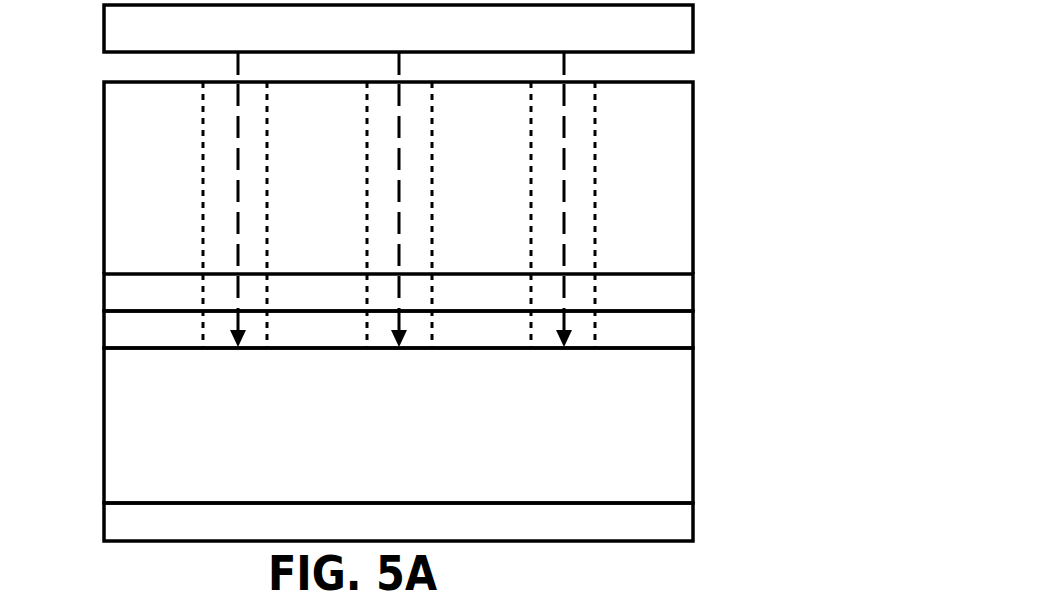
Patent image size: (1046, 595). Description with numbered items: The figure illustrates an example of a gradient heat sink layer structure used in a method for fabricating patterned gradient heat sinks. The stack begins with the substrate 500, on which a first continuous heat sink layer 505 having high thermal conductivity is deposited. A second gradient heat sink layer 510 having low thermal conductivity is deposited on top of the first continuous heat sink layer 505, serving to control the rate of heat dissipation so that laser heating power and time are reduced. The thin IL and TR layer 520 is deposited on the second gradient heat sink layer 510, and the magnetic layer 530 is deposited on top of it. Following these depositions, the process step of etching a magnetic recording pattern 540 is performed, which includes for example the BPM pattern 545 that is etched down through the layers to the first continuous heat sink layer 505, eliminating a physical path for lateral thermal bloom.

The magnetic recording pattern 540 is at (682, 37).
The BPM pattern 545 is at (367, 177).
The magnetic layer 530 is at (658, 211).
The thin IL and TR layer 520 is at (122, 296).
The second gradient heat sink layer 510 is at (672, 333).
The first continuous heat sink layer 505 is at (658, 452).
The substrate 500 is at (663, 525).